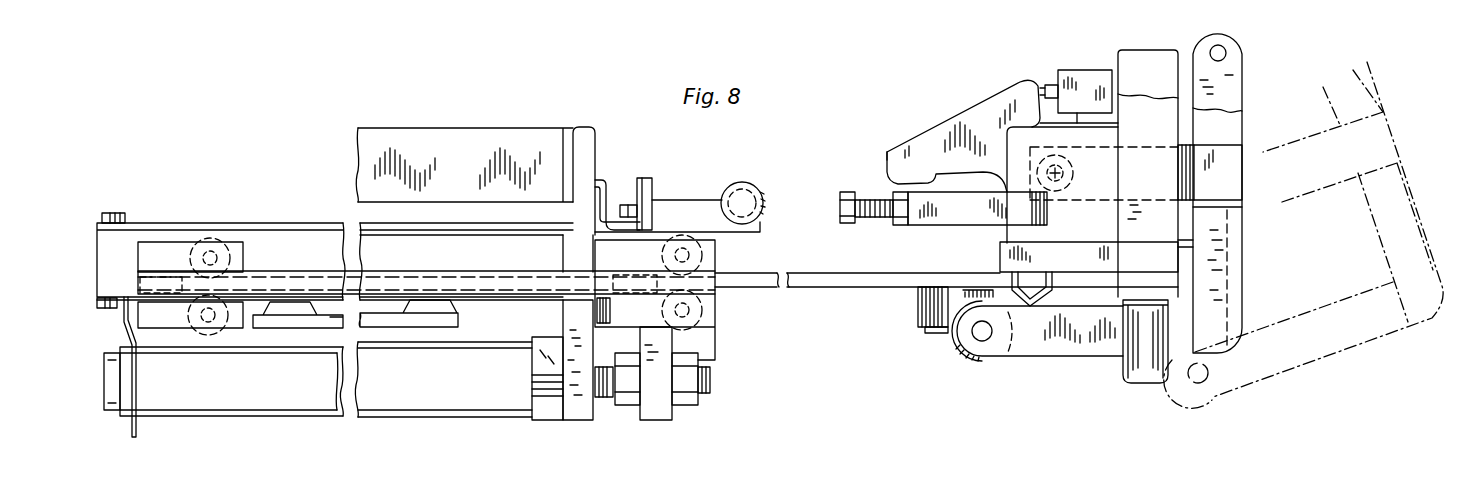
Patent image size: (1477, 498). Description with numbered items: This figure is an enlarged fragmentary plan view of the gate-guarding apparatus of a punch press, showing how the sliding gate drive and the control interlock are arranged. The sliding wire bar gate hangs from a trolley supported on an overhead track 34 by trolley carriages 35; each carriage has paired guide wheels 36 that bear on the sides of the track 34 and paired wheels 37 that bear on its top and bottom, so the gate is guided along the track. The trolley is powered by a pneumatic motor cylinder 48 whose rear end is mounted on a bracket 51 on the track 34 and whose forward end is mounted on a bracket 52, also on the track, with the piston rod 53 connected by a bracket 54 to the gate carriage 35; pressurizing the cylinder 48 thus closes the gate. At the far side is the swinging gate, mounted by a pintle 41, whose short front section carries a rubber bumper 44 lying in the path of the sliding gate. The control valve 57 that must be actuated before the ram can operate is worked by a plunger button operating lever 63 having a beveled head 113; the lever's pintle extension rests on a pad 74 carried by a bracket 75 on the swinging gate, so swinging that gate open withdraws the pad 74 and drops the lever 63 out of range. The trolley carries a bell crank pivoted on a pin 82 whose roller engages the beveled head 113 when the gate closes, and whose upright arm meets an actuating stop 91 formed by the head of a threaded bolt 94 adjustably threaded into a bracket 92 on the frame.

The overhead track 34 is at (752, 284).
The trolley carriage 35 is at (713, 255).
The guide wheels 36 is at (213, 242).
The wheels 37 is at (158, 287).
The pintle 41 is at (1222, 52).
The rubber bumper 44 is at (955, 337).
The pneumatic motor cylinder 48 is at (300, 400).
The bracket 51 is at (133, 427).
The bracket 52 is at (583, 408).
The piston rod 53 is at (708, 388).
The bracket 54 is at (663, 383).
The control valve 57 is at (1068, 72).
The plunger button operating lever 63 is at (973, 115).
The pad 74 is at (1073, 172).
The bracket 75 is at (1078, 198).
The pin 82 is at (625, 207).
The actuating stop 91 is at (847, 192).
The bracket 92 is at (963, 212).
The threaded bolt 94 is at (863, 220).
The beveled head 113 is at (885, 152).